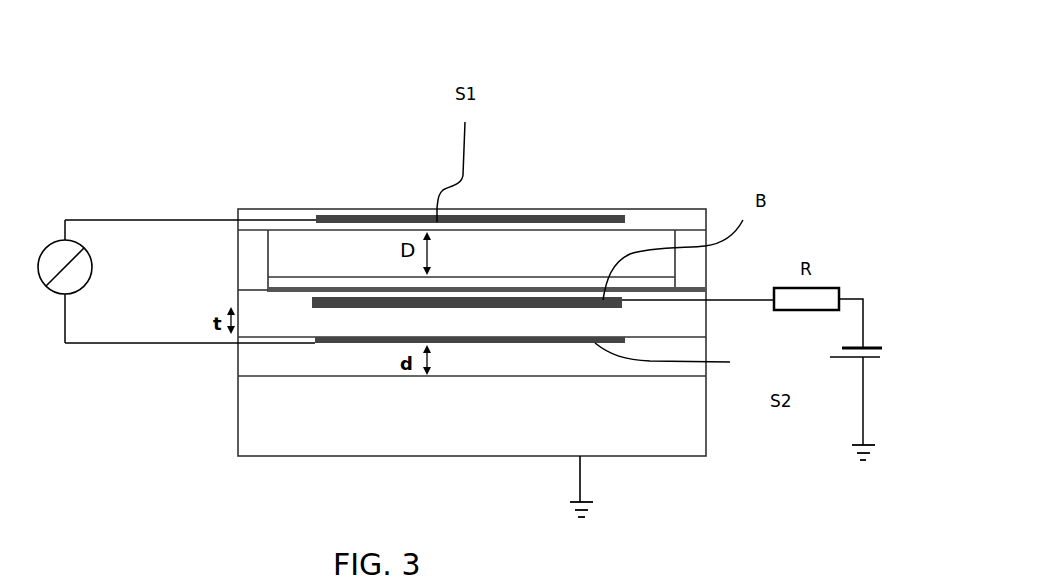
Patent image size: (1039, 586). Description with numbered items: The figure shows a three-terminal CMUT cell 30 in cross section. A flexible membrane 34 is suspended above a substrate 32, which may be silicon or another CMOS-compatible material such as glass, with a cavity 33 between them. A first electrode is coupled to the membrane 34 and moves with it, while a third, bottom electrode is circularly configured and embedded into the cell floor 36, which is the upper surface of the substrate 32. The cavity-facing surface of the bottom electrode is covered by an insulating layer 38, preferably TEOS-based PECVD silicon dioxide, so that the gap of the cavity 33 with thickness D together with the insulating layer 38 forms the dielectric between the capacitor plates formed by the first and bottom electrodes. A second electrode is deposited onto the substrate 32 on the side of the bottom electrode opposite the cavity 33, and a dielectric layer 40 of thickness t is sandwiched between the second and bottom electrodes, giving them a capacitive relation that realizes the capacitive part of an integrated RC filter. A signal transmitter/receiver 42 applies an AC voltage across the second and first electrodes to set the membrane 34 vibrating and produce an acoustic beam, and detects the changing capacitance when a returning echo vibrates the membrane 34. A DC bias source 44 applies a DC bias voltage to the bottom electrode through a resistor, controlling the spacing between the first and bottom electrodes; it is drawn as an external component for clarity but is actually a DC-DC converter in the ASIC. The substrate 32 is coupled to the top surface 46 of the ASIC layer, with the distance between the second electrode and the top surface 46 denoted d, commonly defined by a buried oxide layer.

The three-terminal CMUT cell 30 is at (166, 104).
The substrate 32 is at (239, 354).
The cavity 33 is at (361, 255).
The flexible membrane 34 is at (258, 214).
The cell floor 36 is at (289, 289).
The insulating layer 38 is at (476, 280).
The dielectric layer 40 is at (540, 322).
The signal transmitter/receiver 42 is at (49, 245).
The DC bias source 44 is at (906, 362).
The top surface of the ASIC layer 46 is at (302, 378).